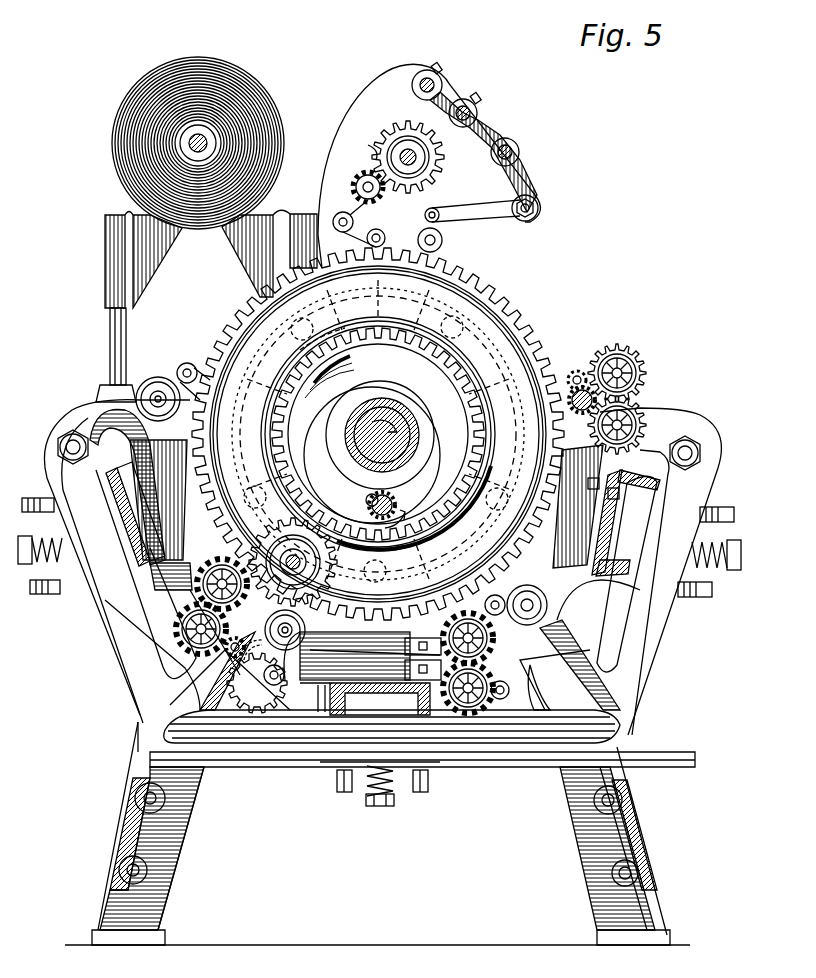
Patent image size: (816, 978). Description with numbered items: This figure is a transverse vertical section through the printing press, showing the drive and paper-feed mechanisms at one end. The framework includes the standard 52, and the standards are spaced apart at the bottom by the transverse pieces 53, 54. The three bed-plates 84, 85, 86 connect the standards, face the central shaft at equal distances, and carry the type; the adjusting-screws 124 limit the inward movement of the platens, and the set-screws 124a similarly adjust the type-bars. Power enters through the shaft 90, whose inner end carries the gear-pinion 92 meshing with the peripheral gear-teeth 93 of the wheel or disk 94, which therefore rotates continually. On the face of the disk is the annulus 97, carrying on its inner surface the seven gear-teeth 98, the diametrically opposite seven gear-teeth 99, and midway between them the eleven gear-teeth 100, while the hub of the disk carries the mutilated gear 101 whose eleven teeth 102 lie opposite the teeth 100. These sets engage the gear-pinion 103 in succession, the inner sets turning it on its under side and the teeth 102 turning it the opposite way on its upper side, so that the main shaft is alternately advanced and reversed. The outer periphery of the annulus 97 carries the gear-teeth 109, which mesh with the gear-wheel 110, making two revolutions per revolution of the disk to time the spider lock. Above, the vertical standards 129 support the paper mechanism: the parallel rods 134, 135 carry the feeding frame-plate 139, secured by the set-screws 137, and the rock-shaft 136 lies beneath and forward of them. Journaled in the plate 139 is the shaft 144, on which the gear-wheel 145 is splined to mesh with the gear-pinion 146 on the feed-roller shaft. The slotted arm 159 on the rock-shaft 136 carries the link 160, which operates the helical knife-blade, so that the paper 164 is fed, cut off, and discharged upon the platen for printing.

The paper 164 is at (246, 92).
The set-screws 137 is at (438, 64).
The rod 134 is at (440, 82).
The feeding frame-plate 139 is at (427, 166).
The rod 135 is at (474, 115).
The gear-wheel 145 is at (372, 148).
The rock-shaft 136 is at (514, 150).
The shaft 144 is at (417, 161).
The gear-pinion 146 is at (358, 180).
The slotted arm 159 is at (536, 186).
The link 160 is at (492, 214).
The peripheral gear-teeth 93 is at (500, 300).
The gear-pinion 92 is at (582, 390).
The shaft 90 is at (614, 348).
The vertical standards 129 is at (126, 336).
The gear-teeth 109 is at (308, 372).
The gear-teeth 100 is at (378, 434).
The annulus 97 is at (470, 373).
The gear-teeth 98 is at (310, 400).
The mutilated gear 101 is at (398, 395).
The gear-teeth 99 is at (378, 434).
The wheel or disk 94 is at (492, 406).
The teeth 102 is at (372, 500).
The gear-pinion 103 is at (396, 500).
The gear-wheel 110 is at (272, 508).
The adjusting-screws 124 is at (733, 520).
The bed-plate 84 is at (153, 553).
The bed-plate 86 is at (617, 575).
The bed-plate 85 is at (360, 675).
The set-screws 124a is at (428, 786).
The transverse piece 53 is at (112, 836).
The standard 52 is at (180, 848).
The transverse piece 54 is at (644, 851).